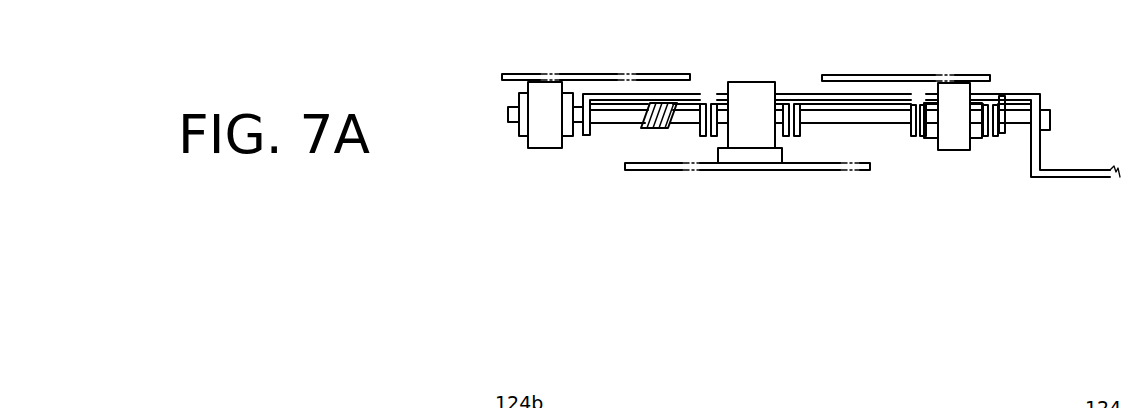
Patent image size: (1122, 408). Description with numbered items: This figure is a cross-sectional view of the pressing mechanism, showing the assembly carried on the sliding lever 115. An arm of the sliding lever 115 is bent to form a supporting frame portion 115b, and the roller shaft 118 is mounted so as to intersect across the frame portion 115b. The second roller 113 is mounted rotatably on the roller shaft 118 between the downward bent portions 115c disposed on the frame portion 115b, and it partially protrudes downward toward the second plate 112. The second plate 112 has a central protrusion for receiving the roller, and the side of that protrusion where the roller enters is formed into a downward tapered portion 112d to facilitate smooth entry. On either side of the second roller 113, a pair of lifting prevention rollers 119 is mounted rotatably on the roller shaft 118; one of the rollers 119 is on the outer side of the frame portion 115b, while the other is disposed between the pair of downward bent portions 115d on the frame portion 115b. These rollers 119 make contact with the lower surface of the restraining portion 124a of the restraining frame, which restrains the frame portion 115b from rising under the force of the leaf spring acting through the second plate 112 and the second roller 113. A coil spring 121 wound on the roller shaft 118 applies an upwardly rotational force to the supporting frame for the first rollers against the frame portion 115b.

The second plate 112 is at (653, 171).
The downward tapered portion 112d is at (745, 163).
The second roller 113 is at (760, 140).
The sliding lever 115 is at (1073, 172).
The supporting frame portion 115b is at (1020, 96).
The downward bent portions 115c is at (702, 128).
The downward bent portions 115d is at (913, 138).
The roller shaft 118 is at (880, 124).
The lifting prevention rollers 119 is at (542, 149).
The coil spring 121 is at (648, 126).
The restraining portion 124a is at (553, 74).